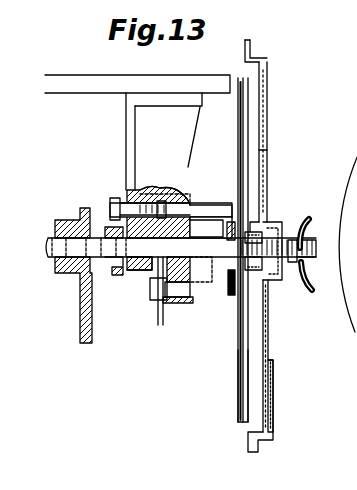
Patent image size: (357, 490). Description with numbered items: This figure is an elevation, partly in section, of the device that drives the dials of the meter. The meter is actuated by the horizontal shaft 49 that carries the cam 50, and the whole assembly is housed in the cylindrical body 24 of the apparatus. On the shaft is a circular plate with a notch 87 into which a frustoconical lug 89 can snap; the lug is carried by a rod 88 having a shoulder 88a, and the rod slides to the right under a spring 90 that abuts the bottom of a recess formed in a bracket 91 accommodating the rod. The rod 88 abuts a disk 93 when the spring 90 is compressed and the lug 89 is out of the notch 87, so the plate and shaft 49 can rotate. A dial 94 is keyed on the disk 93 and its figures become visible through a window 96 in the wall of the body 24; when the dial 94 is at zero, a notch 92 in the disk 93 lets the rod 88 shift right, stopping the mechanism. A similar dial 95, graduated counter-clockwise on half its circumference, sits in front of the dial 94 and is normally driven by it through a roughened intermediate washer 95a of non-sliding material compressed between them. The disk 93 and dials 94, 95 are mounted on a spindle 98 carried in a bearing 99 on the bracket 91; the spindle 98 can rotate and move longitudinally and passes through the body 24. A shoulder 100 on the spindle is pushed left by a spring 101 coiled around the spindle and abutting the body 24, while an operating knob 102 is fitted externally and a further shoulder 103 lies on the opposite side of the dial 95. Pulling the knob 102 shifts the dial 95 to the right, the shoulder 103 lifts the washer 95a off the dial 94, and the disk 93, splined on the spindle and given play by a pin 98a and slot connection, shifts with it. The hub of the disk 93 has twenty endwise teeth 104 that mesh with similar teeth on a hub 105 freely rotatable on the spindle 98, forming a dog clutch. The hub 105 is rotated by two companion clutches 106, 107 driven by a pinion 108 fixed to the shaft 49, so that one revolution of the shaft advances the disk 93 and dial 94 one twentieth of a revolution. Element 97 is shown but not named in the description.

The body 24 is at (251, 44).
The horizontal shaft 49 is at (48, 259).
The cam 50 is at (82, 343).
The notch 87 is at (112, 222).
The rod 88 is at (231, 220).
The shoulder 88a is at (178, 187).
The lug 89 is at (120, 200).
The spring 90 is at (153, 173).
The bracket 91 is at (185, 114).
The notch 92 is at (227, 203).
The disk 93 is at (241, 298).
The dial 94 is at (237, 402).
The dial 95 is at (249, 162).
The roughened intermediate washer 95a is at (257, 223).
The window 96 is at (268, 86).
The strip 97 is at (274, 402).
The spindle 98 is at (302, 259).
The pin 98a is at (265, 220).
The bearing 99 is at (160, 292).
The shoulder 100 is at (265, 283).
The spring 101 is at (279, 227).
The operating knob 102 is at (319, 280).
The shoulder 103 is at (228, 340).
The teeth 104 is at (217, 272).
The hub 105 is at (205, 272).
The clutch 106 is at (148, 271).
The clutch 107 is at (158, 318).
The pinion 108 is at (192, 299).